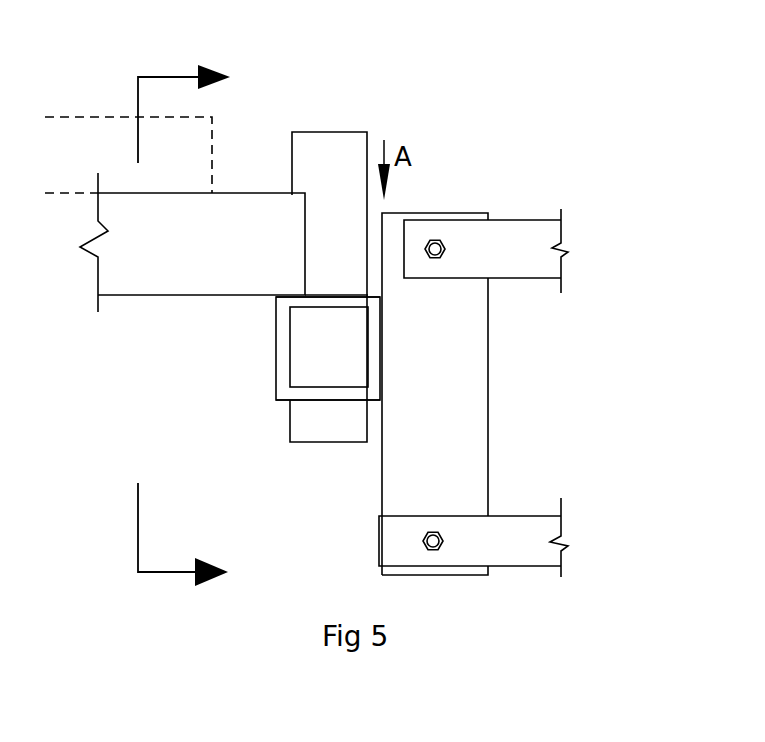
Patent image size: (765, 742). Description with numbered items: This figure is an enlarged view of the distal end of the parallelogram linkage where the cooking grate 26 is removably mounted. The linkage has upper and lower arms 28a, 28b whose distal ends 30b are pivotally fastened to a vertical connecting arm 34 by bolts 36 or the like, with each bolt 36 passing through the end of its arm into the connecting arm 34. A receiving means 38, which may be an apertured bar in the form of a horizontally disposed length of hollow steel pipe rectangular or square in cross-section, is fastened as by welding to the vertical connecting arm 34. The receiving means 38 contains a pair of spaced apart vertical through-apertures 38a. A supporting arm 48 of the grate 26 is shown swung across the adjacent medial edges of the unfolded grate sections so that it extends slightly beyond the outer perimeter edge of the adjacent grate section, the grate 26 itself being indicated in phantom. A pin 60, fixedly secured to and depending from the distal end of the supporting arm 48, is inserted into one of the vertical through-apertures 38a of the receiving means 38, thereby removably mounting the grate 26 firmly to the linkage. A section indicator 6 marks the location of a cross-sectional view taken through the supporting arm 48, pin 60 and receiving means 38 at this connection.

The section line 6- 6 is at (184, 319).
The cooking grate 26 is at (195, 143).
The supporting arm 48 is at (147, 285).
The pin 60 is at (357, 150).
The receiving means 38 is at (287, 347).
The vertical through-aperture 38a is at (295, 300).
The vertical connecting arm 34 is at (468, 408).
The distal end 30b is at (516, 230).
The upper arm 28a is at (510, 280).
The lower arm 28b is at (495, 523).
The bolt 36 is at (437, 553).